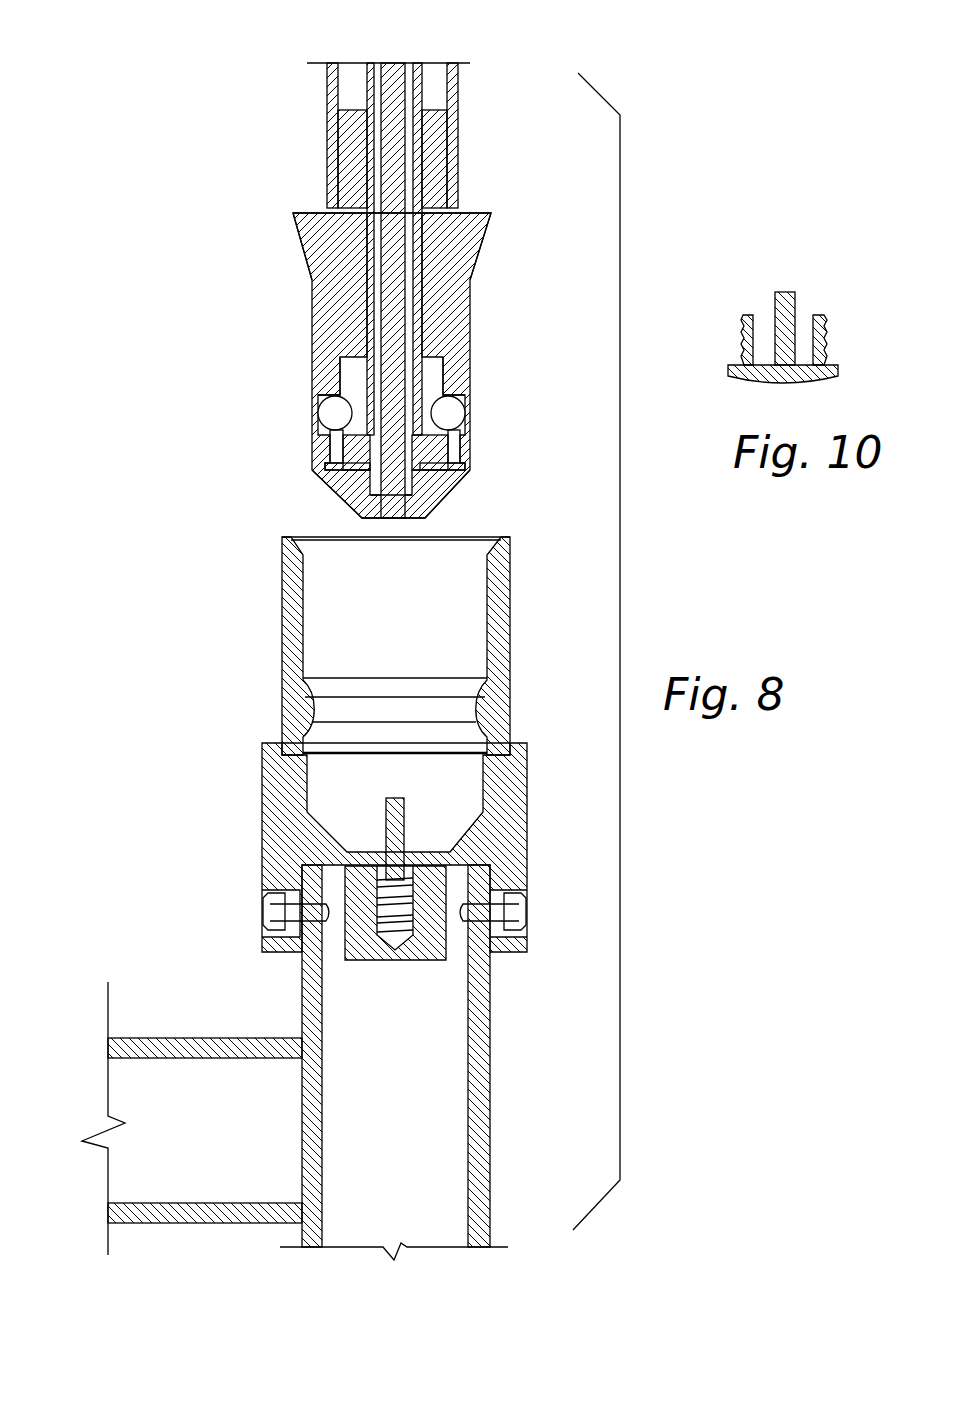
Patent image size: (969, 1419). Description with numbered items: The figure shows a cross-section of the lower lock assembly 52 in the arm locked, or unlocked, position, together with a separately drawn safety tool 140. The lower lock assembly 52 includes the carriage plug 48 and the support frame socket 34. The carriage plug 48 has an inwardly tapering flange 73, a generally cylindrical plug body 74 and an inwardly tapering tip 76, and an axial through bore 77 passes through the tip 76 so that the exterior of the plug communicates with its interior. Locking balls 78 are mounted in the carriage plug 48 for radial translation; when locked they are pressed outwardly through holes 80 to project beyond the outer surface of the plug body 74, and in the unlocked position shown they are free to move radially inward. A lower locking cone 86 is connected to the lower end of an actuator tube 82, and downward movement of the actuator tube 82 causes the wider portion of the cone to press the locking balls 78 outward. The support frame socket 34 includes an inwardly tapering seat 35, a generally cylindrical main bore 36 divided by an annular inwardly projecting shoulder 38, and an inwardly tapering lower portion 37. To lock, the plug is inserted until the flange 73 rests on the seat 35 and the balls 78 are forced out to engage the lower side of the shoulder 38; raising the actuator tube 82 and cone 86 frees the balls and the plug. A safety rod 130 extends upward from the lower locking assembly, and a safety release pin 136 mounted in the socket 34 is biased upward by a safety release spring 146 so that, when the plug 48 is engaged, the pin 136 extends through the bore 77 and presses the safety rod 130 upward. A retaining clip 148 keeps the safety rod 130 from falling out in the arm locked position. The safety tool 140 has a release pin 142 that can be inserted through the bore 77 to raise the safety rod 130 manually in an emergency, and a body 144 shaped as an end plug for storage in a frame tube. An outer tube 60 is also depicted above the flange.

In FIG. 8, the support frame socket 34 is at (318, 522).
In FIG. 8, the inwardly tapering seat 35 is at (489, 544).
In FIG. 8, the main bore 36 is at (485, 606).
In FIG. 8, the inwardly tapering lower portion 37 is at (332, 828).
In FIG. 8, the annular inwardly projecting shoulder 38 is at (478, 710).
In FIG. 8, the carriage plug 48 is at (520, 281).
In FIG. 8, the lower lock assembly 52 is at (213, 461).
In FIG. 8, the outer tube 60 is at (327, 97).
In FIG. 8, the inwardly tapering flange 73 is at (312, 283).
In FIG. 8, the plug body 74 is at (312, 318).
In FIG. 8, the inwardly tapering tip 76 is at (325, 484).
In FIG. 8, the axial through bore 77 is at (403, 527).
In FIG. 8, the locking balls 78 is at (462, 420).
In FIG. 8, the holes 80 is at (462, 405).
In FIG. 8, the actuator tube 82 is at (418, 78).
In FIG. 8, the lower locking cone 86 is at (340, 372).
In FIG. 8, the safety rod 130 is at (387, 61).
In FIG. 8, the safety release pin 136 is at (405, 838).
In FIG. 8, the safety release spring 146 is at (432, 932).
In FIG. 8, the retaining clip 148 is at (410, 435).
In FIG. 10, the safety tool 140 is at (834, 272).
In FIG. 10, the release pin 142 is at (786, 291).
In FIG. 10, the body 144 is at (742, 332).